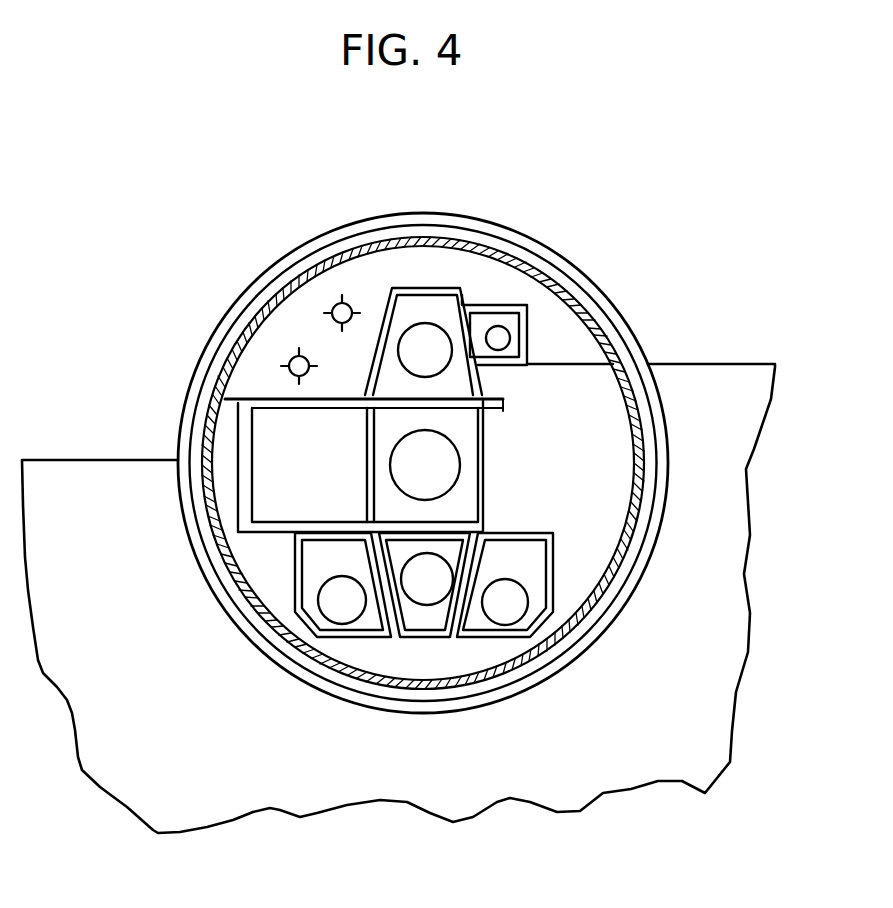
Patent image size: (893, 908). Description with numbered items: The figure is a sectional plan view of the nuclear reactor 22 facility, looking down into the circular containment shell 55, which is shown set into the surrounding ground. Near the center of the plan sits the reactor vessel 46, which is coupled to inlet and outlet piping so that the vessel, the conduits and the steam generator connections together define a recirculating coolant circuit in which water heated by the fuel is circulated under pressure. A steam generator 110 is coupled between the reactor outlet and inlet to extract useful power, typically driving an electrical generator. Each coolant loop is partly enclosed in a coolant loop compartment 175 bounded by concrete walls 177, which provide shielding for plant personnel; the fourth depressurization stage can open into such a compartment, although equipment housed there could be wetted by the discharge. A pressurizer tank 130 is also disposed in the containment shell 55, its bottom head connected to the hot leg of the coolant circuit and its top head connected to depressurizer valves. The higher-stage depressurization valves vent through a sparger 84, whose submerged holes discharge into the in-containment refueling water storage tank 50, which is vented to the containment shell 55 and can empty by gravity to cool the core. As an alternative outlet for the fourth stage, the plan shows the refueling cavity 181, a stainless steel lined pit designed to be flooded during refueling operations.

The nuclear reactor 22 is at (600, 567).
The containment shell 55 is at (602, 323).
The in-containment refueling water storage tank 50 is at (323, 285).
The sparger 84 is at (288, 360).
The refueling cavity 181 is at (258, 418).
The reactor vessel 46 is at (385, 498).
The concrete walls 177 is at (423, 290).
The coolant loop compartment 175 is at (450, 308).
The steam generator 110 is at (417, 333).
The pressurizer tank 130 is at (498, 338).